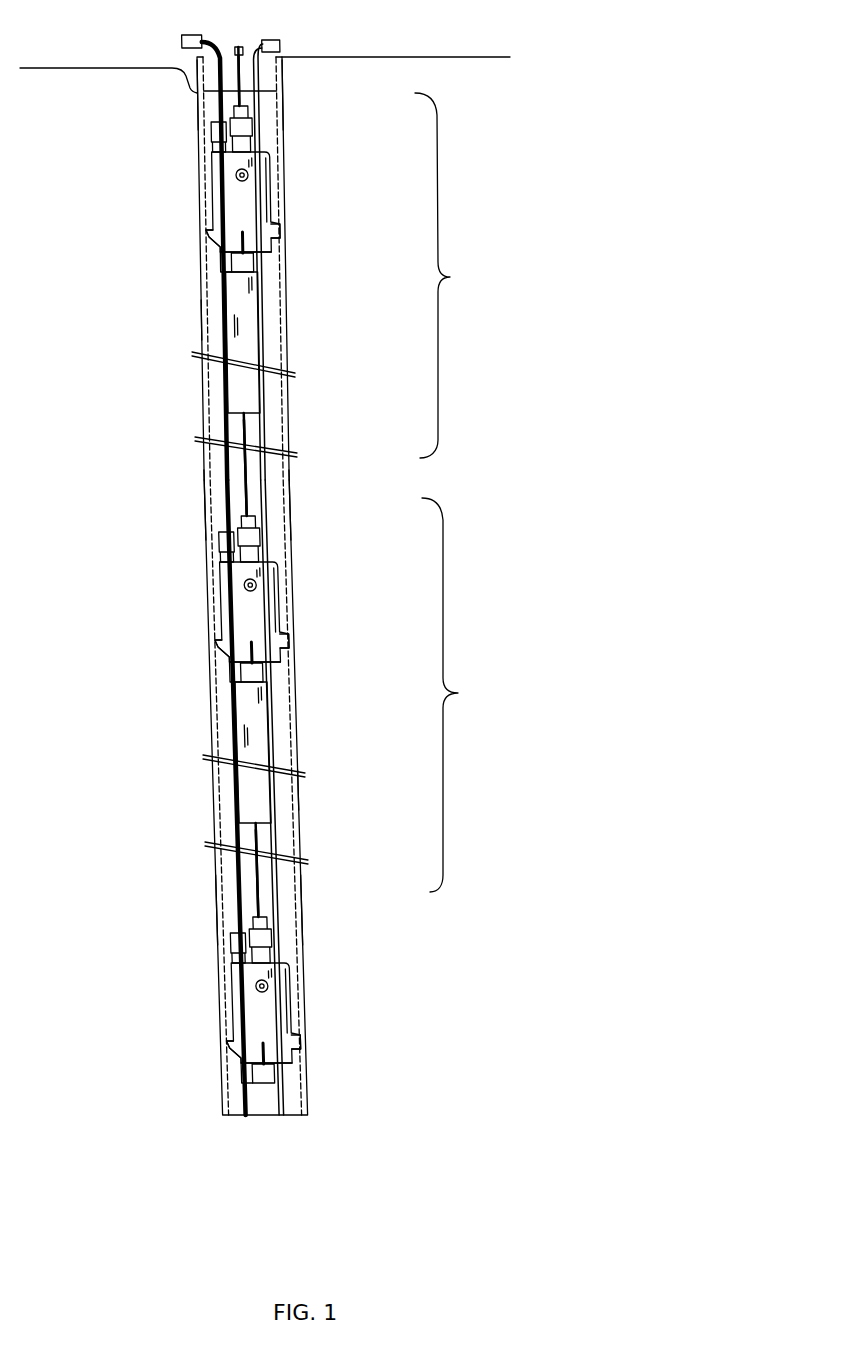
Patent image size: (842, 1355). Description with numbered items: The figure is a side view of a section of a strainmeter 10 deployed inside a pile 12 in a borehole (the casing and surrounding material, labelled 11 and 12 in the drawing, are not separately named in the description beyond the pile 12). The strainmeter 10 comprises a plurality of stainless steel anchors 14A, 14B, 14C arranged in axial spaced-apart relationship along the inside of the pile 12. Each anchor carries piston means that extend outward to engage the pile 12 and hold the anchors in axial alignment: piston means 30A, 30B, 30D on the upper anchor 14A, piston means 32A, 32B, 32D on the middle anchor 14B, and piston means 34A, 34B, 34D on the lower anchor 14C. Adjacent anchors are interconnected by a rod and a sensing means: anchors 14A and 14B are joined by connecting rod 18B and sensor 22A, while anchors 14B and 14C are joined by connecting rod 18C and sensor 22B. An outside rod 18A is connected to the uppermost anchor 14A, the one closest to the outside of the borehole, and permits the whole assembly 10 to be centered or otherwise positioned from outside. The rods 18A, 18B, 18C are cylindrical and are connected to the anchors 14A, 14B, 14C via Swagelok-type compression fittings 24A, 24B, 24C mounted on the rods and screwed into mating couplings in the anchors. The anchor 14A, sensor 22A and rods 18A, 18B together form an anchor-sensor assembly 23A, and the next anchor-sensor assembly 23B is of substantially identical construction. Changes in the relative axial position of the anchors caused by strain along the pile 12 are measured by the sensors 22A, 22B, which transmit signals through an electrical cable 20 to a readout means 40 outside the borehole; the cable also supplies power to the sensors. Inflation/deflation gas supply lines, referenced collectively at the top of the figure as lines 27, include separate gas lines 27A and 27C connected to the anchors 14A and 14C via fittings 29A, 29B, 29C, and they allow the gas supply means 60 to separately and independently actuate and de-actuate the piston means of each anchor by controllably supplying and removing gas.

The strainmeter 10 is at (326, 310).
The well casing 11 is at (213, 810).
The pile 12 is at (297, 790).
The anchor 14A is at (250, 197).
The anchor 14B is at (260, 607).
The anchor 14C is at (272, 1012).
The outside rod 18A is at (282, 100).
The connecting rod 18B is at (205, 507).
The connecting rod 18C is at (222, 910).
The electrical cable 20 is at (220, 178).
The sensing means 22A is at (238, 305).
The sensing means 22B is at (248, 707).
The anchor-sensor assembly 23A is at (459, 275).
The anchor-sensor assembly 23B is at (465, 695).
The compression fitting 24A is at (251, 133).
The compression fitting 24B is at (251, 542).
The compression fitting 24C is at (251, 945).
The inflation/deflation gas supply lines 27 is at (239, 47).
The gas line 27A is at (203, 102).
The gas line 27C is at (205, 507).
The fitting 29A is at (210, 132).
The fitting 29B is at (210, 542).
The fitting 29C is at (210, 945).
The piston means 30A is at (203, 237).
The piston means 30B is at (282, 230).
The piston means 30D is at (282, 263).
The piston means 32A is at (217, 645).
The piston means 32B is at (290, 640).
The piston means 32D is at (277, 670).
The piston means 34A is at (218, 1047).
The piston means 34B is at (303, 1048).
The piston means 34D is at (282, 1073).
The readout means 40 is at (193, 35).
The gas supply means 60 is at (272, 40).